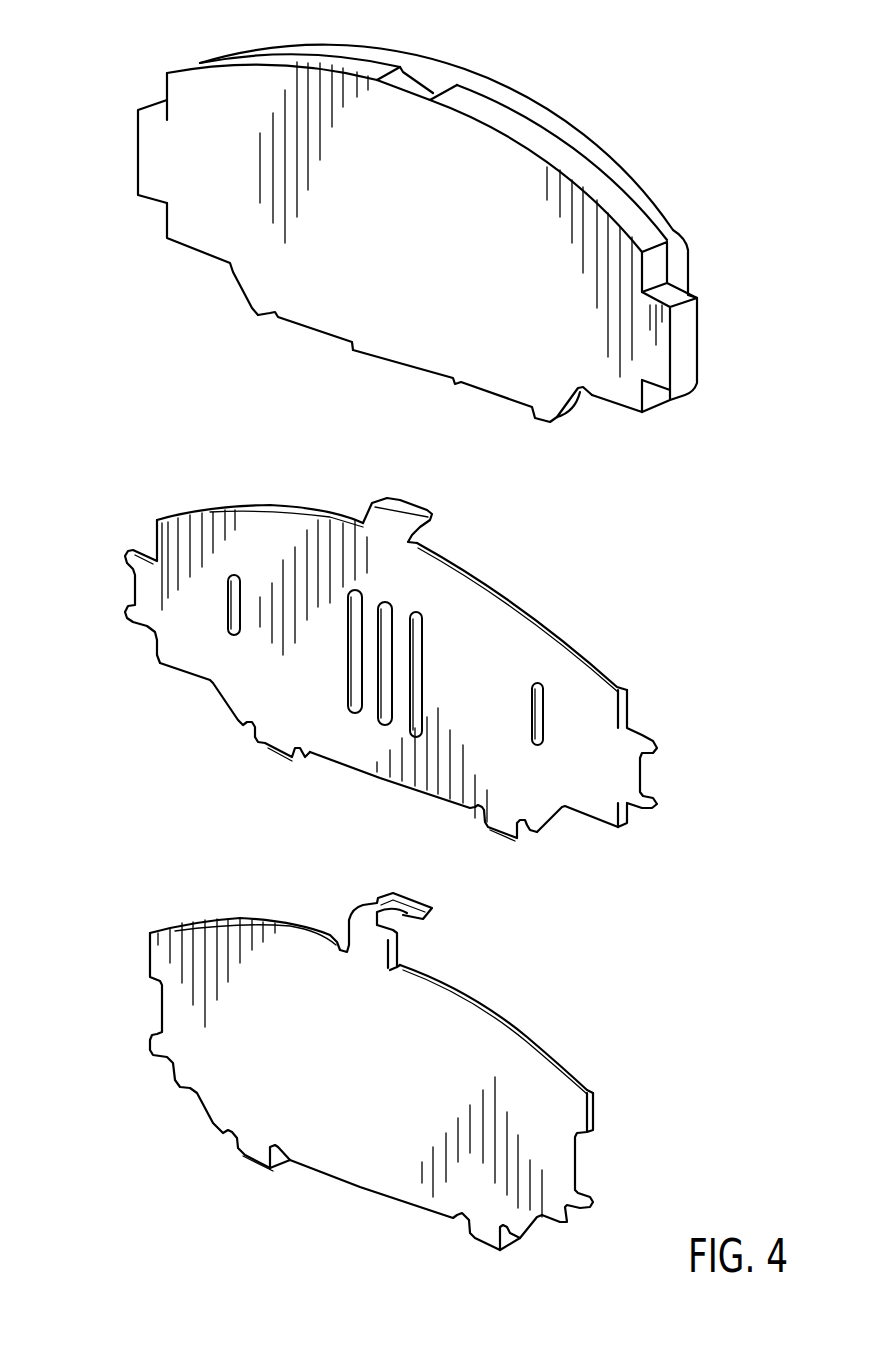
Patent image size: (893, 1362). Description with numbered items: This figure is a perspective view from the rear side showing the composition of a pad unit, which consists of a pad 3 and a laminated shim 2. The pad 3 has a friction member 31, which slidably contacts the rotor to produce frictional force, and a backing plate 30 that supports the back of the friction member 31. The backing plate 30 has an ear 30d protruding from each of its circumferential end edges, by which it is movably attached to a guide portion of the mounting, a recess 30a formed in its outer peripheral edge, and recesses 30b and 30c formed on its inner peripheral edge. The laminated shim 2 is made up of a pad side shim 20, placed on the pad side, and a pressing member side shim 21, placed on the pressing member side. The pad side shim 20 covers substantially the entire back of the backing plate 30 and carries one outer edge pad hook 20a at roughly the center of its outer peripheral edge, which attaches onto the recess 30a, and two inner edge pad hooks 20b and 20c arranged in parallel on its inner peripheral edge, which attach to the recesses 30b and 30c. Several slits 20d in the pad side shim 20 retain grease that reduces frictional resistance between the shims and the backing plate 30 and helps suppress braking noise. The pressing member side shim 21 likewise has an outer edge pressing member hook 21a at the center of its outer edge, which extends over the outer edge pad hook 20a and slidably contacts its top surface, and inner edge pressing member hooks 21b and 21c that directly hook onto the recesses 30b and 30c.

The pad 3 is at (119, 65).
The backing plate 30 is at (570, 182).
The recess 30a is at (417, 83).
The recess 30b is at (315, 332).
The recess 30c is at (488, 393).
The ear 30d is at (150, 160).
The friction member 31 is at (562, 133).
The laminated shim 2 is at (95, 768).
The pad side shim 20 is at (140, 712).
The outer edge pad hook 20a is at (428, 513).
The inner edge pad hook 20b is at (270, 747).
The inner edge pad hook 20c is at (503, 823).
The slits 20d is at (232, 597).
The pressing member side shim 21 is at (136, 904).
The outer edge pressing member hook 21a is at (343, 937).
The inner edge pressing member hook 21b is at (253, 1160).
The inner edge pressing member hook 21c is at (477, 1235).